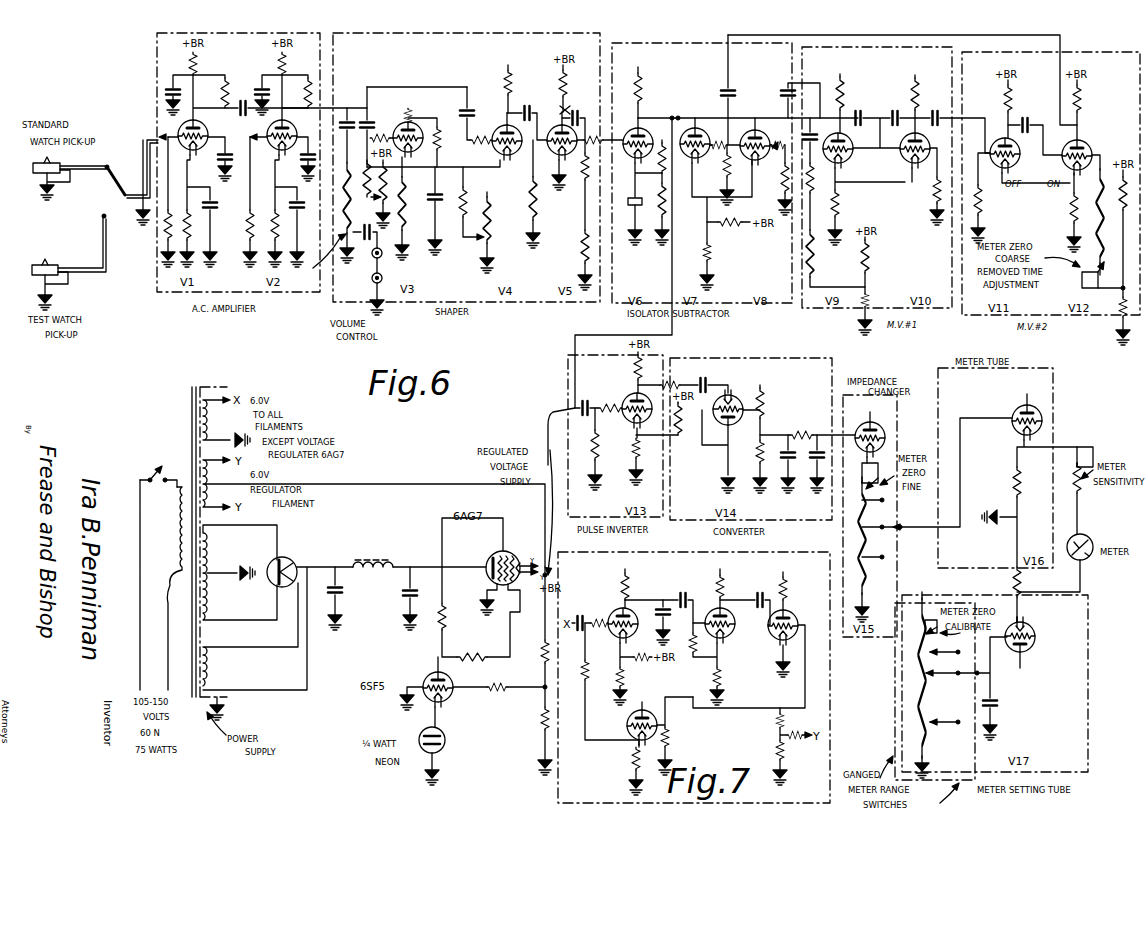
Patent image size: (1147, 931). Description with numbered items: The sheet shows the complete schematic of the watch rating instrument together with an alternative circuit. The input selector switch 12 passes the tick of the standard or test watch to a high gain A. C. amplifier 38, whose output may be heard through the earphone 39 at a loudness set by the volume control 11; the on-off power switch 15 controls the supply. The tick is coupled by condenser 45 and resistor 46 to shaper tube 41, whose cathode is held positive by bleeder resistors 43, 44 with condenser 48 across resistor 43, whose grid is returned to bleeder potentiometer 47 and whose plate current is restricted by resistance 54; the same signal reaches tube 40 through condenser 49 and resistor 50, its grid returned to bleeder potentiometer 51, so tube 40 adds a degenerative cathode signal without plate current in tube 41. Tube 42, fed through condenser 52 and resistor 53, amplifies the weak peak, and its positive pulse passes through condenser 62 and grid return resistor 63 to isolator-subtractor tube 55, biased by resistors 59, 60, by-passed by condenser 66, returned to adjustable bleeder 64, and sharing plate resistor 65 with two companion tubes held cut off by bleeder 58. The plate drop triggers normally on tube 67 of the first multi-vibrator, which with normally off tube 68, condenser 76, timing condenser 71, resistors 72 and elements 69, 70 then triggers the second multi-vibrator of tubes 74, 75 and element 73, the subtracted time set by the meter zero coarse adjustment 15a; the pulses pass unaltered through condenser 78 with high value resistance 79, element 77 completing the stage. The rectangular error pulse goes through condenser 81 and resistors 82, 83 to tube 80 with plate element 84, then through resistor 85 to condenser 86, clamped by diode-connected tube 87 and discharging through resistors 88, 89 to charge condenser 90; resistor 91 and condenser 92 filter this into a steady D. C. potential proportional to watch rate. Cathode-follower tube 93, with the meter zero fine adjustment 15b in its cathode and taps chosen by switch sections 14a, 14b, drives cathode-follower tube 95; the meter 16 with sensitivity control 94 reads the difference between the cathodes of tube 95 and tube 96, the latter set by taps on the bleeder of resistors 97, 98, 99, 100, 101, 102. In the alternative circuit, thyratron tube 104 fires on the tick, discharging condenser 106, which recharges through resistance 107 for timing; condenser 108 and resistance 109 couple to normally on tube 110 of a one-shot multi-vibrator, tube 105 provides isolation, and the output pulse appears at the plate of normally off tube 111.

In FIG. 6, the volume control 11 is at (324, 253).
In FIG. 6, the input selector switch 12 is at (112, 182).
In FIG. 6, the on-off power switch 15 is at (146, 470).
In FIG. 6, the meter zero coarse adjustment 15a is at (1102, 290).
In FIG. 6, the meter zero fine adjustment 15b is at (879, 490).
In FIG. 6, the switch section 14a is at (896, 526).
In FIG. 6, the switch section 14b is at (965, 672).
In FIG. 6, the meter 16 is at (1090, 557).
In FIG. 6, the A. C. amplifier 38 is at (172, 293).
In FIG. 6, the earphone 39 is at (381, 285).
In FIG. 6, the shaper tube 40 is at (413, 121).
In FIG. 6, the shaper tube 41 is at (498, 130).
In FIG. 6, the amplifier tube 42 is at (557, 128).
In FIG. 6, the bleeder resistor 43 is at (406, 198).
In FIG. 6, the bleeder resistor 44 is at (465, 107).
In FIG. 6, the coupling condenser 45 is at (480, 135).
In FIG. 6, the coupling resistor 46 is at (462, 222).
In FIG. 6, the bleeder potentiometer 47 is at (493, 242).
In FIG. 6, the condenser 48 is at (433, 215).
In FIG. 6, the coupling condenser 49 is at (363, 118).
In FIG. 6, the coupling resistor 50 is at (365, 190).
In FIG. 6, the bleeder potentiometer 51 is at (382, 235).
In FIG. 6, the coupling condenser 52 is at (528, 106).
In FIG. 6, the grid resistor 53 is at (531, 200).
In FIG. 6, the plate resistance 54 is at (506, 86).
In FIG. 6, the isolator-subtractor tube 55 is at (636, 128).
In FIG. 6, the bleeder 58 is at (718, 235).
In FIG. 6, the bleeder resistor 59 is at (667, 205).
In FIG. 6, the bleeder resistor 60 is at (668, 165).
In FIG. 6, the coupling condenser 62 is at (577, 110).
In FIG. 6, the grid return resistor 63 is at (583, 183).
In FIG. 6, the adjustable bleeder 64 is at (582, 246).
In FIG. 6, the plate resistor 65 is at (645, 96).
In FIG. 6, the by-pass condenser 66 is at (633, 212).
In FIG. 6, the normally on tube 67 is at (834, 132).
In FIG. 6, the normally off tube 68 is at (895, 157).
In FIG. 6, the cathode resistor 69 is at (839, 198).
In FIG. 6, the plate load resistor 70 is at (844, 98).
In FIG. 6, the timing condenser 71 is at (897, 112).
In FIG. 6, the timing resistors 72 is at (808, 250).
In FIG. 6, the multivibrator tube V11 73 is at (1002, 130).
In FIG. 6, the normally on tube 74 is at (1089, 145).
In FIG. 6, the normally off tube 75 is at (919, 92).
In FIG. 6, the condenser 76 is at (861, 112).
In FIG. 6, the cathode resistor 77 is at (934, 192).
In FIG. 6, the condenser 78 is at (786, 86).
In FIG. 6, the high value resistance 79 is at (781, 160).
In FIG. 6, the tube 80 is at (628, 397).
In FIG. 6, the coupling condenser 81 is at (574, 410).
In FIG. 6, the coupling resistor 82 is at (598, 445).
In FIG. 6, the coupling resistor 83 is at (699, 384).
In FIG. 6, the plate load resistor 84 is at (636, 366).
In FIG. 6, the resistor 85 is at (615, 412).
In FIG. 6, the condenser 86 is at (747, 395).
In FIG. 6, the diode-connected triode 87 is at (750, 402).
In FIG. 6, the resistor 88 is at (765, 410).
In FIG. 6, the resistor 89 is at (758, 455).
In FIG. 6, the condenser 90 is at (786, 465).
In FIG. 6, the filter resistor 91 is at (801, 433).
In FIG. 6, the filter condenser 92 is at (815, 465).
In FIG. 6, the impedance changer tube 93 is at (886, 432).
In FIG. 6, the meter sensitivity potentiometer 94 is at (1092, 452).
In FIG. 6, the cathode-follower tube 95 is at (1043, 415).
In FIG. 6, the cathode-follower tube 96 is at (1036, 639).
In FIG. 6, the bleeder resistor 97 is at (921, 679).
In FIG. 6, the bleeder resistor 98 is at (940, 605).
In FIG. 6, the bleeder resistor 99 is at (921, 650).
In FIG. 6, the bleeder resistor 100 is at (921, 672).
In FIG. 6, the bleeder resistor 101 is at (921, 698).
In FIG. 6, the bleeder resistor 102 is at (921, 722).
In FIG. 7, the gas filled thyratron tube 104 is at (615, 612).
In FIG. 7, the isolation tube 105 is at (627, 722).
In FIG. 7, the timing condenser 106 is at (660, 625).
In FIG. 7, the timing resistance 107 is at (631, 592).
In FIG. 7, the coupling condenser 108 is at (686, 598).
In FIG. 7, the coupling resistance 109 is at (697, 656).
In FIG. 7, the normally on tube 110 is at (756, 606).
In FIG. 7, the normally off tube 111 is at (778, 640).